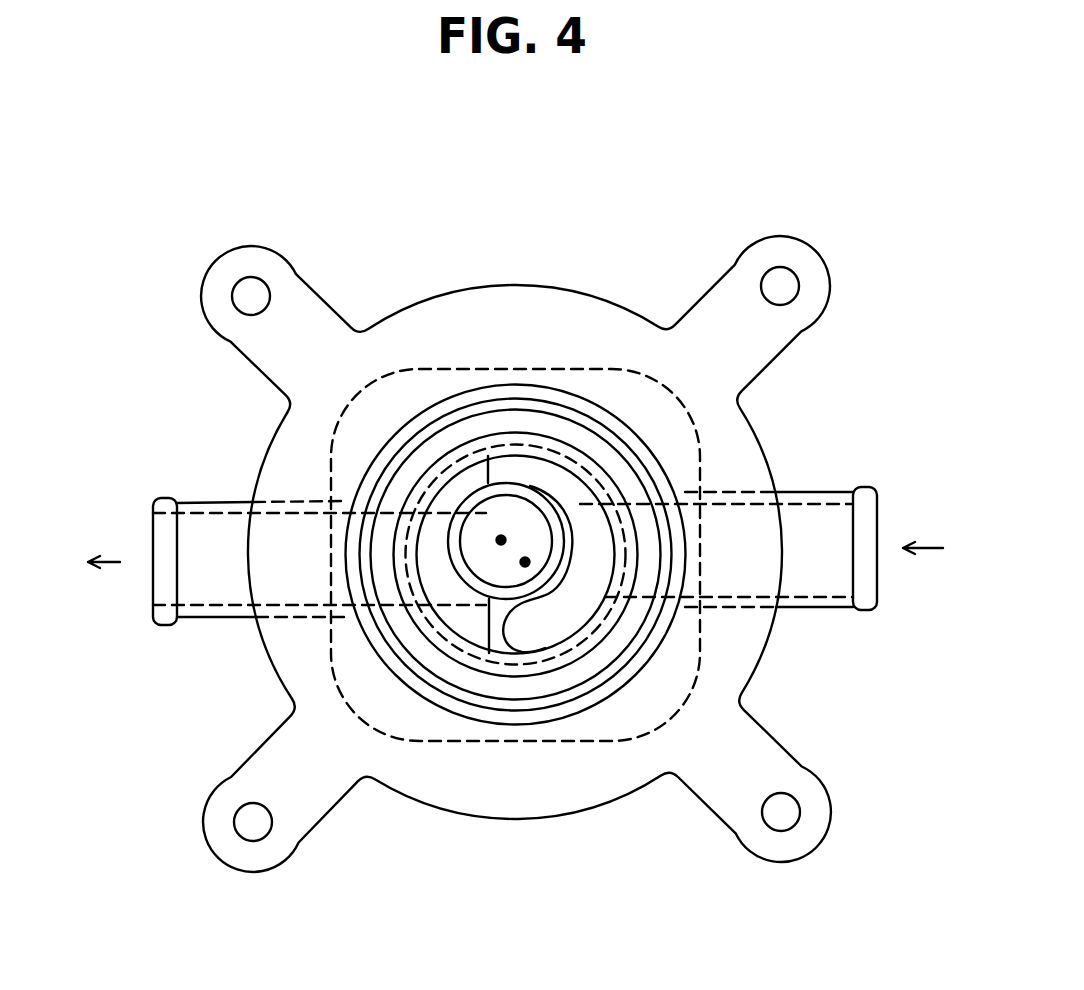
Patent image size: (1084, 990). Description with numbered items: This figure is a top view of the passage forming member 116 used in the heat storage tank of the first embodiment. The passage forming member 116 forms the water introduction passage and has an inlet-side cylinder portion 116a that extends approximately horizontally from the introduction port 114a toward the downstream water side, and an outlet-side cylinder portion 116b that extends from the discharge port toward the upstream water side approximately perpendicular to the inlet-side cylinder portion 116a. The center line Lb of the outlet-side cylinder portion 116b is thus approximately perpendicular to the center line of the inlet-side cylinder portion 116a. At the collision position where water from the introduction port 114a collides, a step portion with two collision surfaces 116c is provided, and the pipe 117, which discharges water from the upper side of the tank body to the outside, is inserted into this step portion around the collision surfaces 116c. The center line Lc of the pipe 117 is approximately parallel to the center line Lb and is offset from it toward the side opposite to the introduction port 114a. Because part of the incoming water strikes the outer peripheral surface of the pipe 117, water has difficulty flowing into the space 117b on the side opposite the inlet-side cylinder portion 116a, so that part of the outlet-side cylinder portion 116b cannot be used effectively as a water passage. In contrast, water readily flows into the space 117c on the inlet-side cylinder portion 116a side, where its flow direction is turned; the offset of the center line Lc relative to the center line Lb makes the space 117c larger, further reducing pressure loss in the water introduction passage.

The passage forming member 116 is at (574, 290).
The inlet-side cylinder portion 116a is at (837, 608).
The introduction port 114a is at (868, 572).
The outlet-side cylinder portion 116b is at (602, 458).
The collision surfaces 116c is at (505, 460).
The pipe 117 is at (478, 590).
The space 117b is at (450, 498).
The space 117c is at (585, 595).
The center line of the pipe Lc is at (501, 540).
The center line of the outlet-side cylinder portion Lb is at (525, 562).